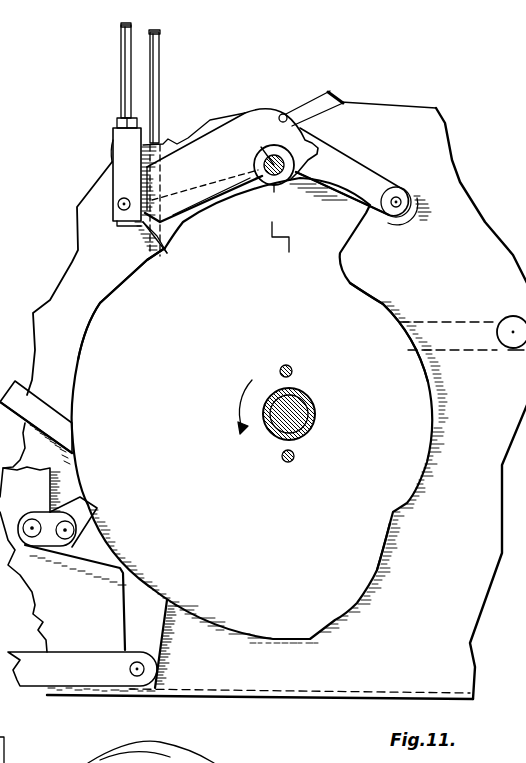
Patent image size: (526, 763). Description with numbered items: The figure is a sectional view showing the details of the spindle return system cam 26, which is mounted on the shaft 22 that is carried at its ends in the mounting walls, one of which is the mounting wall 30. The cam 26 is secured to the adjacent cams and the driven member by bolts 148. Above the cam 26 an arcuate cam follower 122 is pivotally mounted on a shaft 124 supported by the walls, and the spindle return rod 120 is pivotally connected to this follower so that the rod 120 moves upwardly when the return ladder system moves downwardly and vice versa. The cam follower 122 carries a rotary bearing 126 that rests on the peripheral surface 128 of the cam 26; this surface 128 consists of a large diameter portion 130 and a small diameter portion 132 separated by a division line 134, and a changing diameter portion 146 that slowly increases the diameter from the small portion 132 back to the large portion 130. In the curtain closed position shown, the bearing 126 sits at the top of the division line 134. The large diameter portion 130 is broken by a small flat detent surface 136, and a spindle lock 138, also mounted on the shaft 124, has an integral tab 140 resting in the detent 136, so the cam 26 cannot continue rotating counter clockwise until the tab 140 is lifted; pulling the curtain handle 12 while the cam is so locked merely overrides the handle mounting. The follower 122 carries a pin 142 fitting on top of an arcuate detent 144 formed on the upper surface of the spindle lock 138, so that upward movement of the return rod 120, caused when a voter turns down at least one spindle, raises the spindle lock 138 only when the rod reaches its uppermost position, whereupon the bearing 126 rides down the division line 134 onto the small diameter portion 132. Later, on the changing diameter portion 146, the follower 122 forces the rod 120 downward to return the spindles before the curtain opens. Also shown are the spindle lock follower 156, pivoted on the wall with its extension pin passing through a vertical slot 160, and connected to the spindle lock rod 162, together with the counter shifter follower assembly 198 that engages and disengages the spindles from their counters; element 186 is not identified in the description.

The curtain handle 12 is at (233, 100).
The shaft 22 is at (306, 417).
The spindle return system cam 26 is at (361, 590).
The mounting wall 30 is at (486, 567).
The spindle return rod 120 is at (123, 77).
The arcuate cam follower 122 is at (205, 150).
The shaft 124 is at (283, 178).
The rotary bearing 126 is at (405, 185).
The peripheral surface 128 is at (384, 305).
The large diameter portion 130 is at (83, 338).
The small diameter portion 132 is at (435, 408).
The division line 134 is at (375, 200).
The detent surface 136 is at (130, 277).
The spindle lock 138 is at (207, 182).
The tab 140 is at (163, 247).
The pin 142 is at (285, 114).
The arcuate detent 144 is at (336, 101).
The changing diameter portion 146 is at (384, 570).
The bolts 148 is at (293, 370).
The spindle lock follower 156 is at (486, 317).
The vertical slot 160 is at (107, 760).
The spindle lock rod 162 is at (158, 60).
The follower 186 is at (182, 762).
The counter shifter follower assembly 198 is at (100, 552).